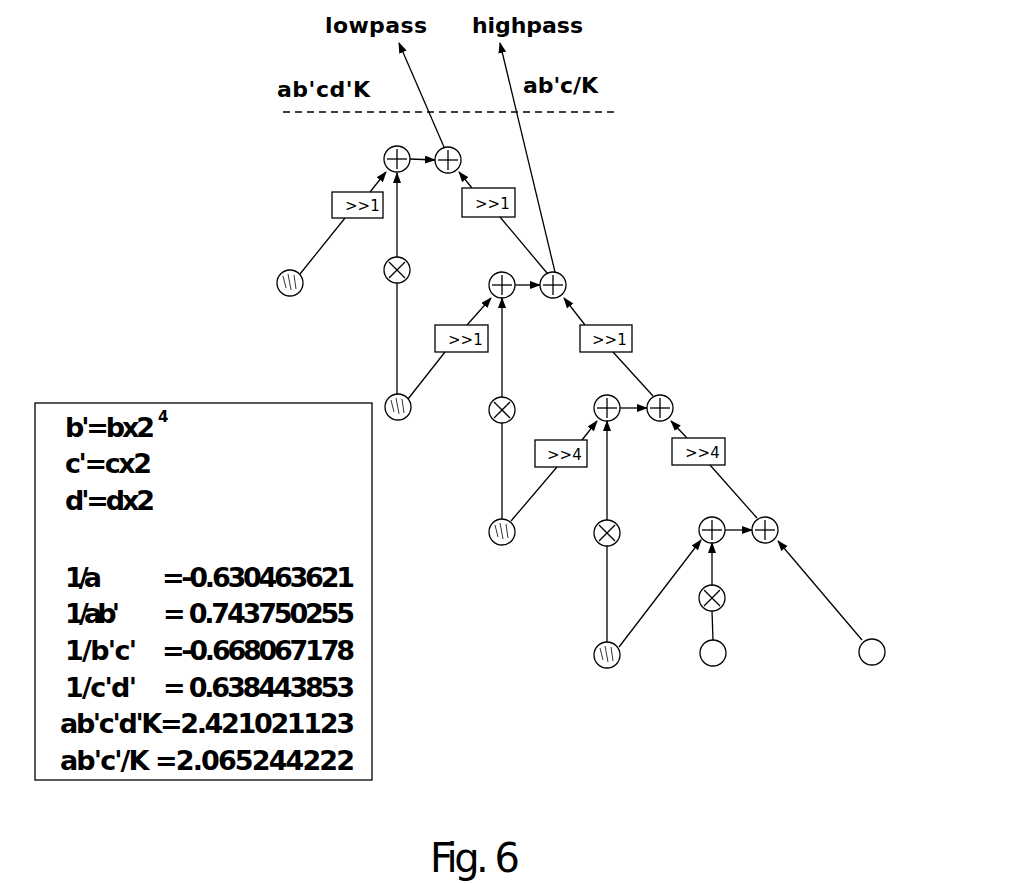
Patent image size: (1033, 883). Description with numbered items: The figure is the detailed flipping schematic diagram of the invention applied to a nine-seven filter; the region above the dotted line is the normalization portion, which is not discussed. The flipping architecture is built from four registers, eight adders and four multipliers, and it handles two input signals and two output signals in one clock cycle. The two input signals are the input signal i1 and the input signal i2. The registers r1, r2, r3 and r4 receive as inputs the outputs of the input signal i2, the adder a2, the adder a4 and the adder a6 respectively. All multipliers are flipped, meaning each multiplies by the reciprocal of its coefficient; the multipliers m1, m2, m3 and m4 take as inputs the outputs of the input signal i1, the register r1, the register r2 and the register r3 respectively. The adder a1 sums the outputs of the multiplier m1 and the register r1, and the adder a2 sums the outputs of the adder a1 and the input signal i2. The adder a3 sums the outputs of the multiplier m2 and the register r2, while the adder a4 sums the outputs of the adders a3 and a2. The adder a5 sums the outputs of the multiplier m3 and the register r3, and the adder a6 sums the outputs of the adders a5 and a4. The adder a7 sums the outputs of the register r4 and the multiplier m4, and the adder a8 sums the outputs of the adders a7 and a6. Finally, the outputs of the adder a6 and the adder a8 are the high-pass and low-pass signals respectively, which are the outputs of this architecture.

The adder a1 is at (712, 522).
The adder a2 is at (765, 522).
The adder a3 is at (607, 398).
The adder a4 is at (660, 398).
The adder a5 is at (502, 274).
The adder a6 is at (557, 274).
The adder a7 is at (397, 149).
The adder a8 is at (453, 150).
The multiplier m1 is at (715, 605).
The multiplier m2 is at (614, 543).
The multiplier m3 is at (510, 416).
The multiplier m4 is at (405, 277).
The register r1 is at (617, 661).
The register r2 is at (511, 538).
The register r3 is at (407, 413).
The register r4 is at (300, 287).
The input signal i1 is at (724, 658).
The input signal i2 is at (880, 658).